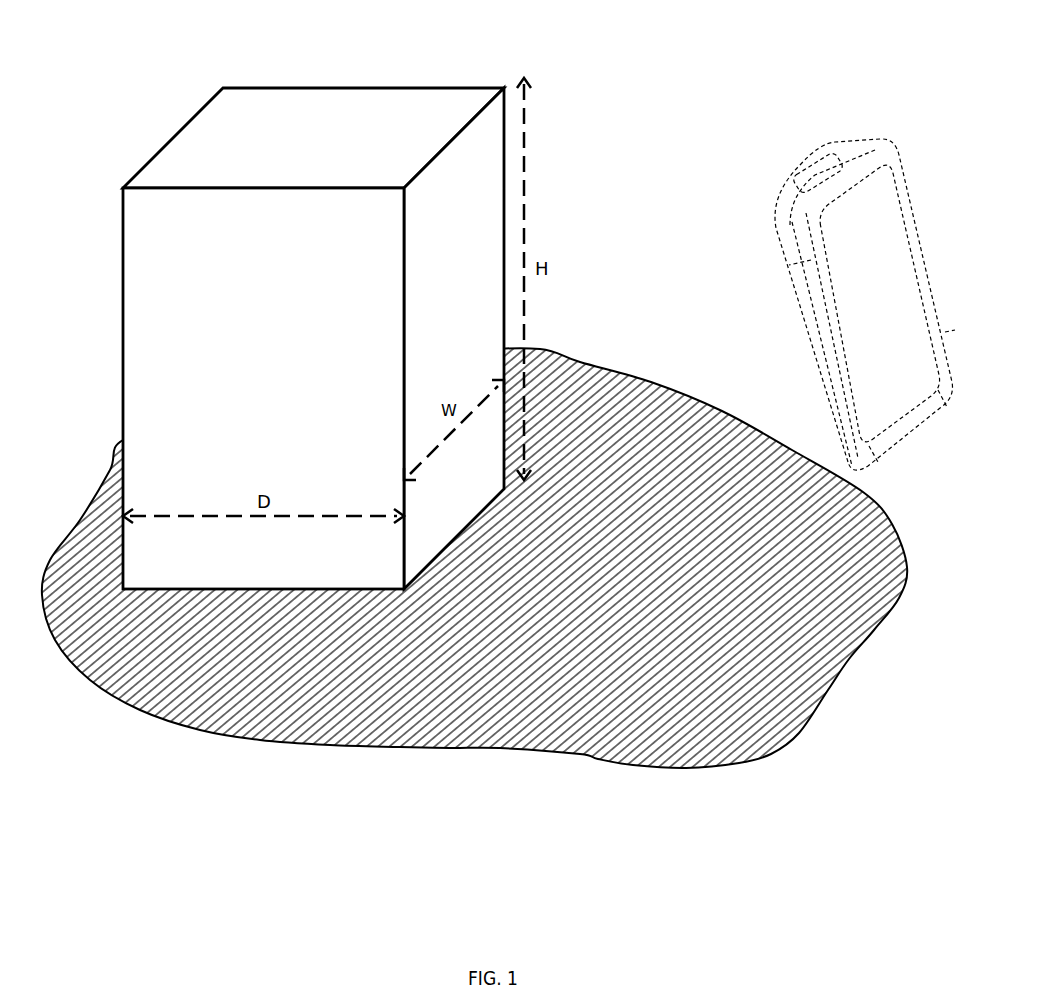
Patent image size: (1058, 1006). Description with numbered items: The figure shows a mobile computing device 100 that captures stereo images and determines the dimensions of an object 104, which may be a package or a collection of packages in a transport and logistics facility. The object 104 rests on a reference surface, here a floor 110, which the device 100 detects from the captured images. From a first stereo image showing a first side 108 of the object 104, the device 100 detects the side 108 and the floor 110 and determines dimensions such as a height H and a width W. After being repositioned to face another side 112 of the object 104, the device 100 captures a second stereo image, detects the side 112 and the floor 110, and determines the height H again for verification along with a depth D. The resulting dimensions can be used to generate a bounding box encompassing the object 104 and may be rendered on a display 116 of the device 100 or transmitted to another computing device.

The mobile computing device 100 is at (865, 246).
The object 104 is at (313, 294).
The first side 108 is at (480, 247).
The floor 110 is at (450, 735).
The second side 112 is at (290, 313).
The display 116 is at (901, 321).